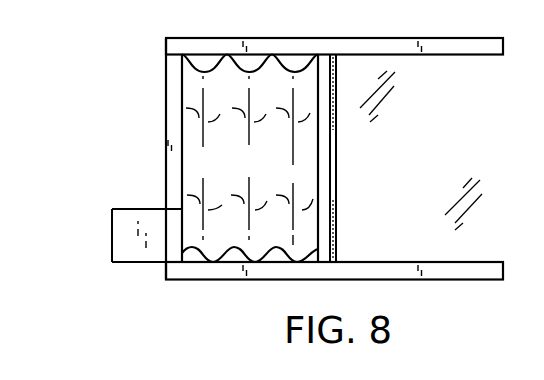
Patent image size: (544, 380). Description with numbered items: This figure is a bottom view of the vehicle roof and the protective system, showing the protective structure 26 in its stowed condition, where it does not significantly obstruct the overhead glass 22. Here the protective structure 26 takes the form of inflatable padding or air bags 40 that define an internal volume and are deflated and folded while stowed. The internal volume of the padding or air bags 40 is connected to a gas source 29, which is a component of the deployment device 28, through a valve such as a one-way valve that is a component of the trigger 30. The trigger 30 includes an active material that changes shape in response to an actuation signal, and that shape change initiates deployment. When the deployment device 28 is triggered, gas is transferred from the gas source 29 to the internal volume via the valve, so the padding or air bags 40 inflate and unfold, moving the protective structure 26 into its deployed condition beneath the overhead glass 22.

The overhead glass 22 is at (406, 159).
The protective structure 26 is at (288, 62).
The deployment device 28 is at (138, 272).
The gas source 29 is at (144, 215).
The trigger 30 is at (177, 244).
The inflatable padding or air bags 40 is at (249, 160).